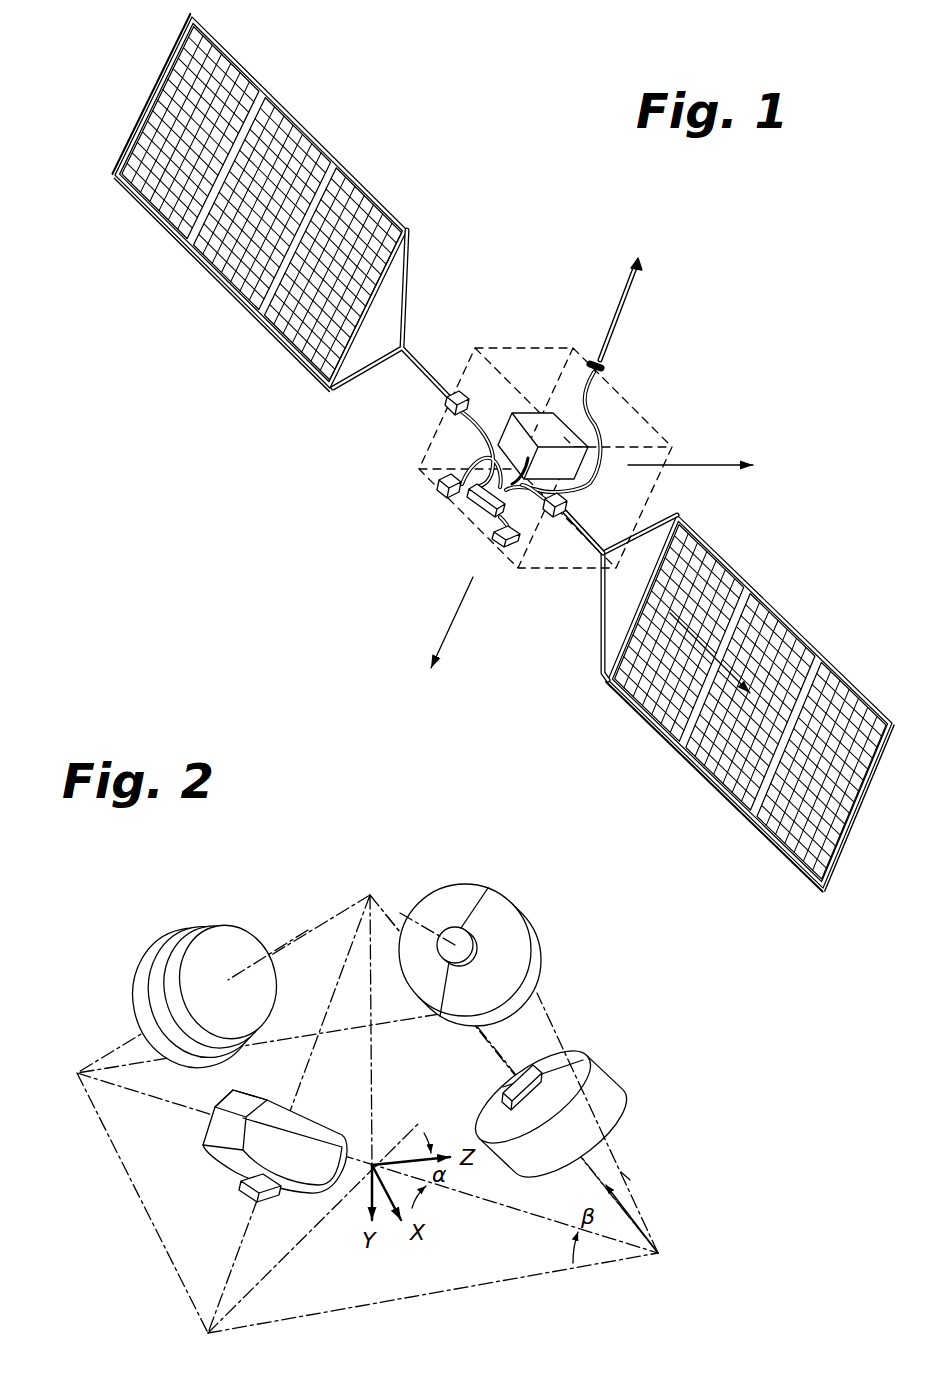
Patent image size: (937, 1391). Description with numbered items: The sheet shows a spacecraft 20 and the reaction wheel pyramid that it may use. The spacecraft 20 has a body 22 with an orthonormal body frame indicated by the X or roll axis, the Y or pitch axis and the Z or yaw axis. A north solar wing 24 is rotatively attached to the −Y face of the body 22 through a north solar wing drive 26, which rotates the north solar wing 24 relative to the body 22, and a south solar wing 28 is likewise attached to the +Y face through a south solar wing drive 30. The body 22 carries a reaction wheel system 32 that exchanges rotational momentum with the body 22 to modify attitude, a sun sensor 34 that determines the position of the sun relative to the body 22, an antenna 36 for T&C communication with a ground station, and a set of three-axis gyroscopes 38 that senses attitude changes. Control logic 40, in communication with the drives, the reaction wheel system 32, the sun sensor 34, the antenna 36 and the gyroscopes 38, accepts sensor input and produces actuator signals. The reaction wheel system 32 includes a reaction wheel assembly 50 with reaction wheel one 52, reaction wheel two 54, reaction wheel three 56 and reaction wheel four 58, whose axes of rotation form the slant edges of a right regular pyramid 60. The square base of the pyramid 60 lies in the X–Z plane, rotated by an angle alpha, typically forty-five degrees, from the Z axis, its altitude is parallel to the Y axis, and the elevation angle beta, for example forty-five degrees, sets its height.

In FIG. 1, the spacecraft 20 is at (660, 328).
In FIG. 1, the body 22 is at (618, 432).
In FIG. 1, the north solar wing 24 is at (385, 190).
In FIG. 1, the north solar wing drive 26 is at (468, 396).
In FIG. 1, the south solar wing 28 is at (803, 638).
In FIG. 1, the south solar wing drive 30 is at (557, 516).
In FIG. 1, the reaction wheel system 32 is at (522, 412).
In FIG. 2, the reaction wheel system 32 is at (684, 1248).
In FIG. 1, the sun sensor 34 is at (437, 487).
In FIG. 1, the antenna 36 is at (608, 332).
In FIG. 1, the gyroscopes 38 is at (493, 540).
In FIG. 1, the control logic 40 is at (467, 505).
In FIG. 2, the reaction wheel assembly 50 is at (437, 1297).
In FIG. 2, the reaction wheel one 52 is at (212, 1120).
In FIG. 2, the reaction wheel two 54 is at (548, 932).
In FIG. 2, the reaction wheel three 56 is at (133, 966).
In FIG. 2, the reaction wheel four 58 is at (617, 1088).
In FIG. 2, the right regular pyramid 60 is at (308, 930).